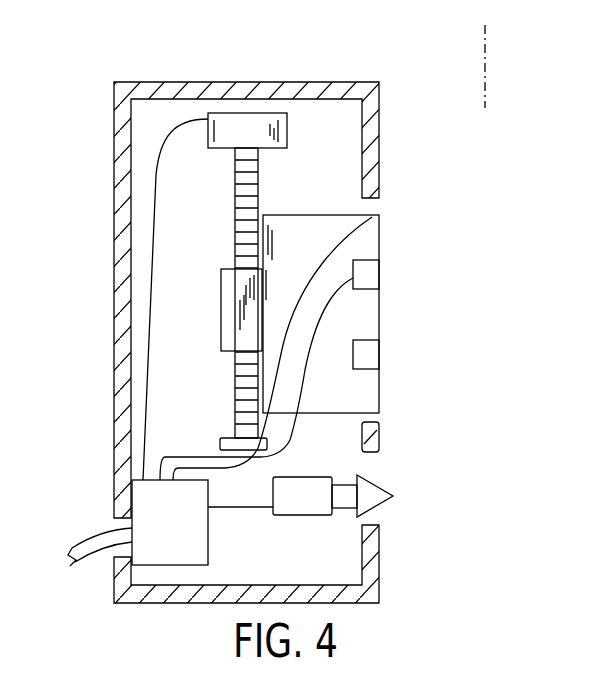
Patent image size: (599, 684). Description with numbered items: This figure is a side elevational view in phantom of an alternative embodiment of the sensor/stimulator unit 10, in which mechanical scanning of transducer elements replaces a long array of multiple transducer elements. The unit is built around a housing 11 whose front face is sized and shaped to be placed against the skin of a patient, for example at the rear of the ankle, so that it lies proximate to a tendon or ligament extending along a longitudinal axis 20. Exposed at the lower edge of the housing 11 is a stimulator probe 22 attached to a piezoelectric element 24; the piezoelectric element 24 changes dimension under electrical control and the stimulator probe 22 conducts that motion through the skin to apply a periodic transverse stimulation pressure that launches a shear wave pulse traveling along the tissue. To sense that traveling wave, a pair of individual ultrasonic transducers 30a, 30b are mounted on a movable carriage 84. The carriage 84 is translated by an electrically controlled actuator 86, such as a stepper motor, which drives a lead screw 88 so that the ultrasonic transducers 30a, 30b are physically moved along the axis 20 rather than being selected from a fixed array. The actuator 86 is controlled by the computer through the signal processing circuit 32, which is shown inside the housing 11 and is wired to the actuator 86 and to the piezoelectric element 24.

The sensor/stimulator unit 10 is at (152, 52).
The housing 11 is at (114, 130).
The longitudinal axis 20 is at (487, 68).
The stimulator probe 22 is at (380, 498).
The piezoelectric element 24 is at (290, 515).
The ultrasonic transducer 30a is at (380, 352).
The ultrasonic transducer 30b is at (380, 270).
The signal processing circuit 32 is at (178, 566).
The movable carriage 84 is at (318, 216).
The actuator 86 is at (249, 118).
The lead screw 88 is at (258, 168).